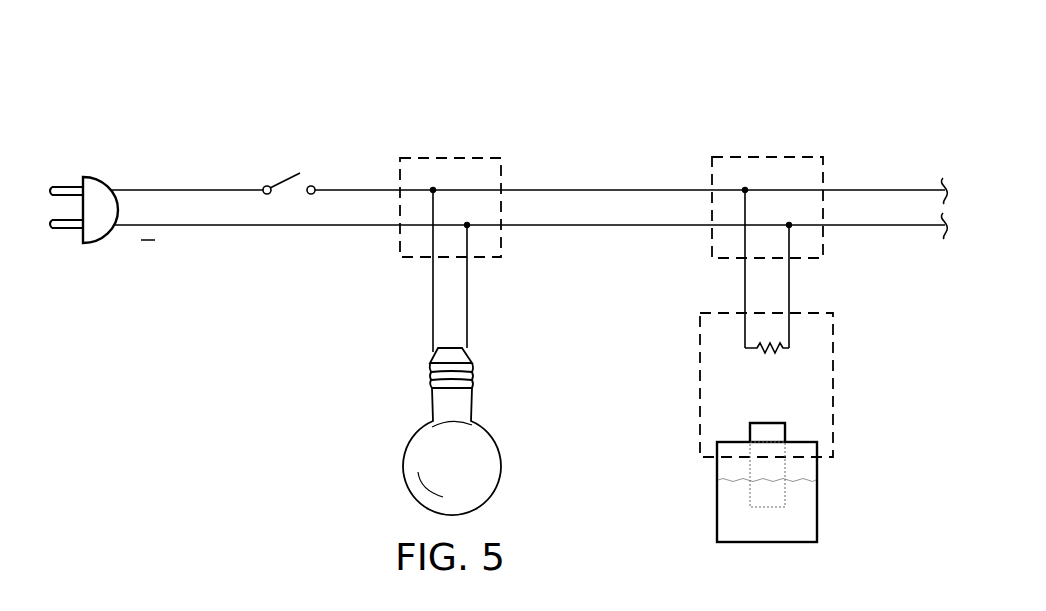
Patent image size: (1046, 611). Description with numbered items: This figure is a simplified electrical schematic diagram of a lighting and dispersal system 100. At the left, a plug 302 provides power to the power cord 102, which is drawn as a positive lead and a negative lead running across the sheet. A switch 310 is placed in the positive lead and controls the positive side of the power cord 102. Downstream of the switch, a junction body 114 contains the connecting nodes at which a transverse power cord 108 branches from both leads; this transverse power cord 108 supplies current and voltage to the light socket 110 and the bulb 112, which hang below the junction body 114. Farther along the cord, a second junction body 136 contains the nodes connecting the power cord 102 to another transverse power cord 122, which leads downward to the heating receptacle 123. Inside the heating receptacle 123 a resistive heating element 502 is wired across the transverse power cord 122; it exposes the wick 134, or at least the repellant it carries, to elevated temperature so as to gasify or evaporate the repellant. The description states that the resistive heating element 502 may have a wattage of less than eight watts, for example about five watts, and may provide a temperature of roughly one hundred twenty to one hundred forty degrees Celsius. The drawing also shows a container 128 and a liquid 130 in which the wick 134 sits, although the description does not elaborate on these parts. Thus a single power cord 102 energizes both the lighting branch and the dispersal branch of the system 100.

The lighting and dispersal system 100 is at (699, 82).
The power cord 102 is at (610, 189).
The transverse power cord 108 is at (432, 275).
The light socket 110 is at (430, 374).
The bulb 112 is at (402, 463).
The junction body 114 is at (438, 157).
The transverse power cord 122 is at (792, 275).
The heating receptacle 123 is at (835, 398).
The container 128 is at (717, 502).
The water 130 is at (810, 507).
The wick 134 is at (767, 507).
The junction body 136 is at (767, 156).
The plug 302 is at (93, 176).
The switch 310 is at (288, 175).
The resistive heating element 502 is at (765, 352).